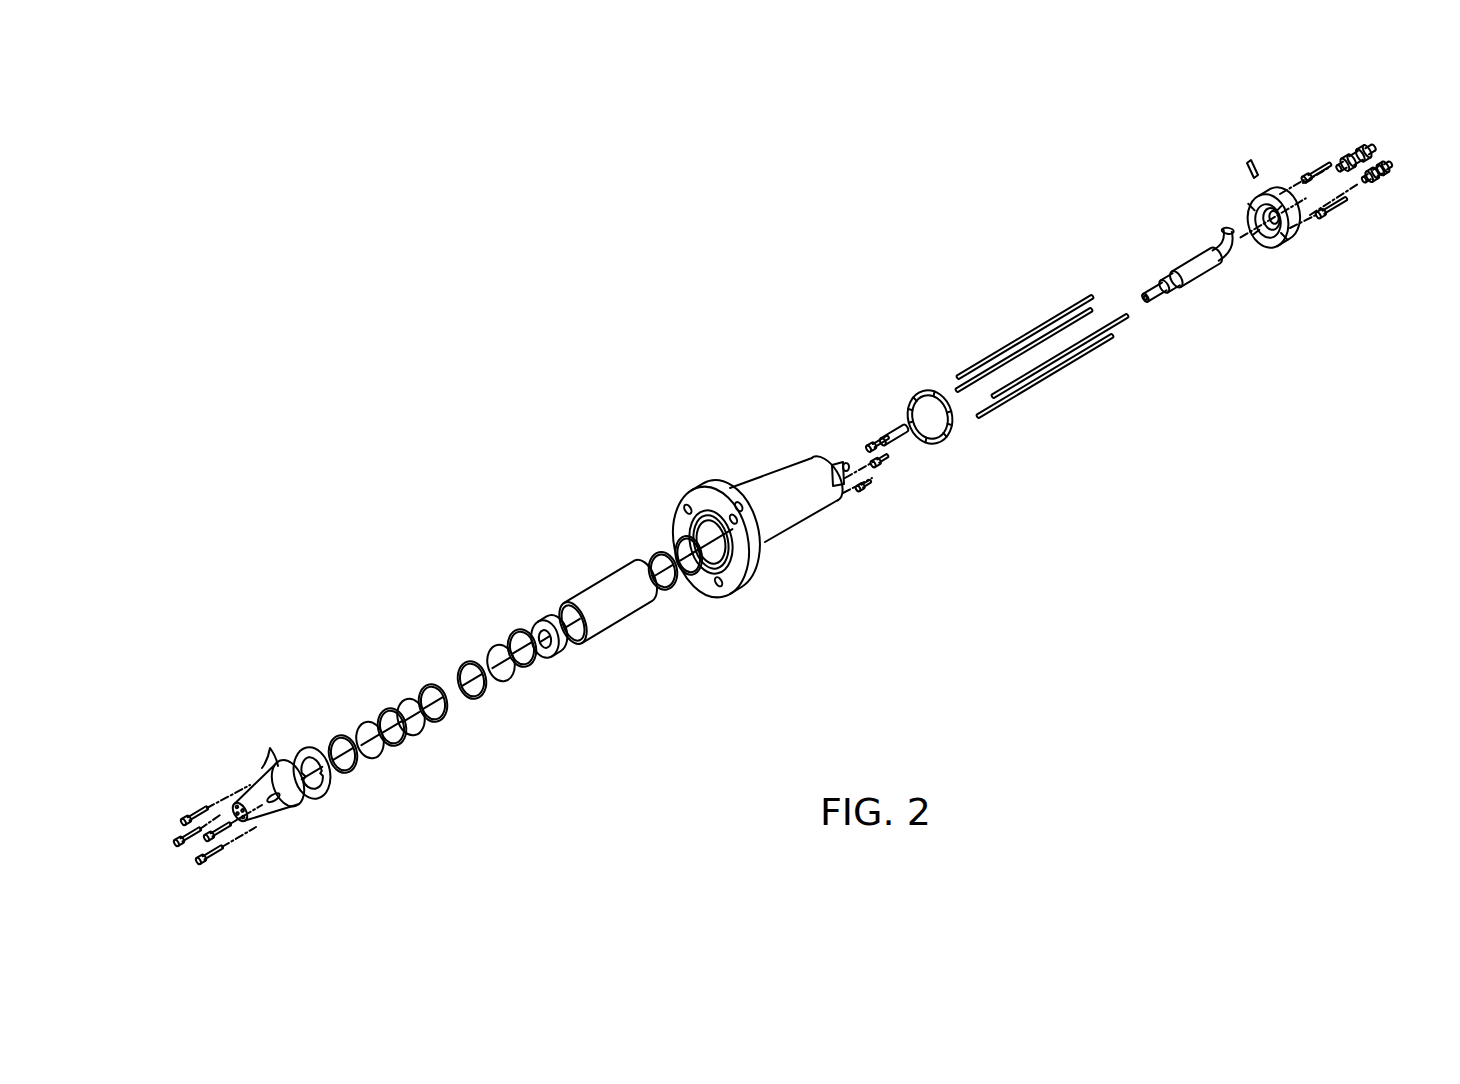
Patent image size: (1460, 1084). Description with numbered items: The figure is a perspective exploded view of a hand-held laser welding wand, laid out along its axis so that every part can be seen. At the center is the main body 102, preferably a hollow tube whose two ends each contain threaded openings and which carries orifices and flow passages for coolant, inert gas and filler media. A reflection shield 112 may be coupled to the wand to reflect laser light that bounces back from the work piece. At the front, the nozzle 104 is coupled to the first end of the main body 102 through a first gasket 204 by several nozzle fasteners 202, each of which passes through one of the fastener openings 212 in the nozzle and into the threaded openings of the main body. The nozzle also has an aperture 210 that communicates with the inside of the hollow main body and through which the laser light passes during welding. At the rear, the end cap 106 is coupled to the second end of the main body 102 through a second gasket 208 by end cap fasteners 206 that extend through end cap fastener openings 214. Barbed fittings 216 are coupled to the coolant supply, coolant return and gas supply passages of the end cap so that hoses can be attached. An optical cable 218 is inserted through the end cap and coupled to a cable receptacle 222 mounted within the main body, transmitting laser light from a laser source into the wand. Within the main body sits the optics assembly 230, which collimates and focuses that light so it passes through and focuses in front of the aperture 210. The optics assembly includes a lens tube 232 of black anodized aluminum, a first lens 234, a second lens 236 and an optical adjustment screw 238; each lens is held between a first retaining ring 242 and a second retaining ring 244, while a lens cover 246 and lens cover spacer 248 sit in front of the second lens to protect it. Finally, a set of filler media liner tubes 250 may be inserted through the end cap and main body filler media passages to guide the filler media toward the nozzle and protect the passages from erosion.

The main body 102 is at (770, 480).
The nozzle 104 is at (249, 797).
The end cap 106 is at (1276, 191).
The reflection shield 112 is at (762, 572).
The nozzle fastener 202 is at (170, 784).
The first gasket 204 is at (324, 800).
The end cap fastener 206 is at (1323, 197).
The second gasket 208 is at (945, 446).
The aperture 210 is at (247, 826).
The fastener openings 212 is at (252, 778).
The end cap fastener openings 214 is at (1250, 225).
The barbed fitting 216 is at (1400, 176).
The optical cable 218 is at (1168, 270).
The cable receptacle 222 is at (838, 466).
The optics assembly 230 is at (345, 789).
The lens tube 232 is at (590, 594).
The first lens 234 is at (492, 647).
The second lens 236 is at (407, 697).
The optical adjustment screw 238 is at (535, 612).
The first retaining ring 242 is at (330, 742).
The second retaining ring 244 is at (430, 687).
The lens cover 246 is at (358, 727).
The lens cover spacer 248 is at (378, 709).
The filler media liner tubes 250 is at (1146, 330).